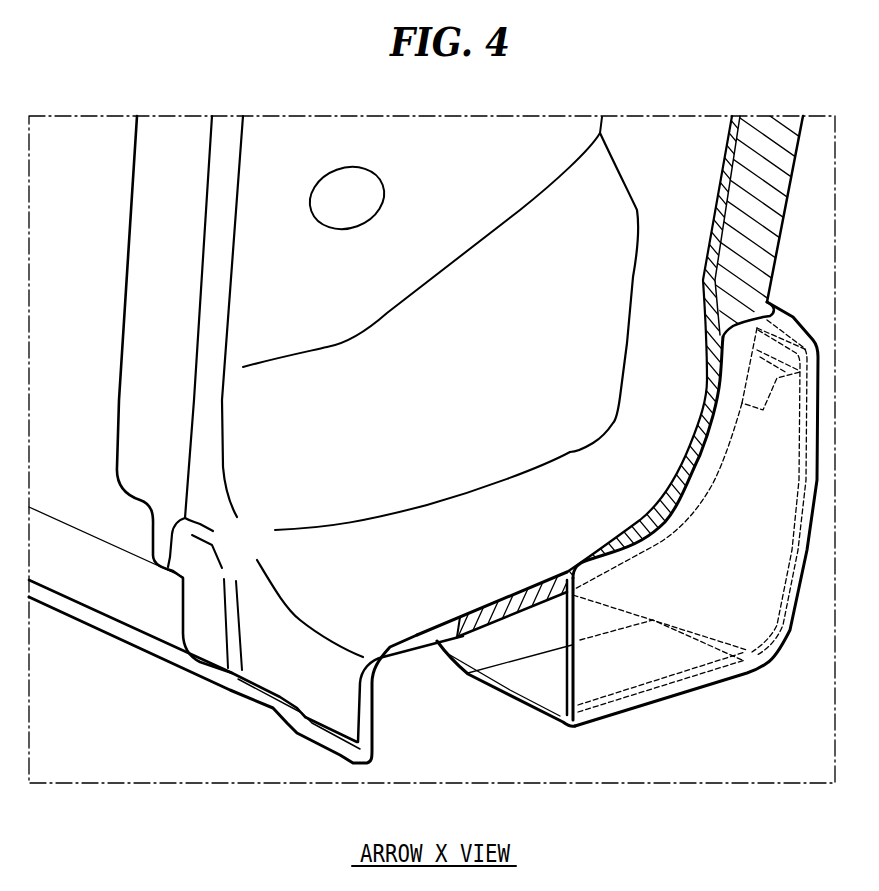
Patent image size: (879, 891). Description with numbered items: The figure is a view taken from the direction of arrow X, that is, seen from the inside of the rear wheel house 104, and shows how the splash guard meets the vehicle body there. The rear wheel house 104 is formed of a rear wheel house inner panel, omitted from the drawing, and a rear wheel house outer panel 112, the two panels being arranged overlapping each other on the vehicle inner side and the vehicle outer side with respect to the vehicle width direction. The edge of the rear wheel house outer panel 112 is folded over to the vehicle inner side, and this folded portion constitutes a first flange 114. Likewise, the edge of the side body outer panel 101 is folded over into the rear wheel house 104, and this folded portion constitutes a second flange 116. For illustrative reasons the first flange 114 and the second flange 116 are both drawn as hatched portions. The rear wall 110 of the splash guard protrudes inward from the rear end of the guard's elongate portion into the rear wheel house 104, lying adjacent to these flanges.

The side body outer panel 101 is at (410, 645).
The rear wheel house 104 is at (399, 419).
The rear wall 110 is at (742, 627).
The rear wheel house outer panel 112 is at (345, 605).
The first flange 114 is at (630, 533).
The second flange 116 is at (507, 590).